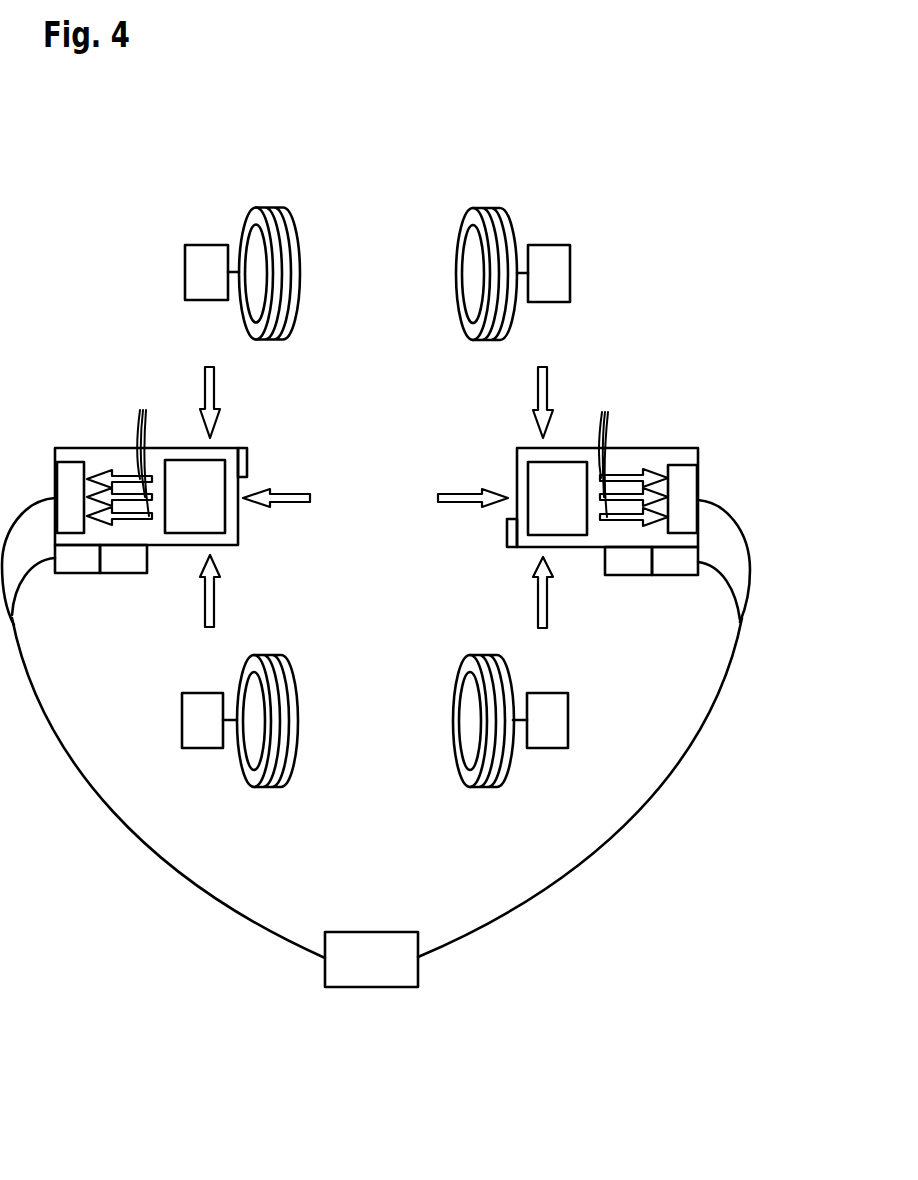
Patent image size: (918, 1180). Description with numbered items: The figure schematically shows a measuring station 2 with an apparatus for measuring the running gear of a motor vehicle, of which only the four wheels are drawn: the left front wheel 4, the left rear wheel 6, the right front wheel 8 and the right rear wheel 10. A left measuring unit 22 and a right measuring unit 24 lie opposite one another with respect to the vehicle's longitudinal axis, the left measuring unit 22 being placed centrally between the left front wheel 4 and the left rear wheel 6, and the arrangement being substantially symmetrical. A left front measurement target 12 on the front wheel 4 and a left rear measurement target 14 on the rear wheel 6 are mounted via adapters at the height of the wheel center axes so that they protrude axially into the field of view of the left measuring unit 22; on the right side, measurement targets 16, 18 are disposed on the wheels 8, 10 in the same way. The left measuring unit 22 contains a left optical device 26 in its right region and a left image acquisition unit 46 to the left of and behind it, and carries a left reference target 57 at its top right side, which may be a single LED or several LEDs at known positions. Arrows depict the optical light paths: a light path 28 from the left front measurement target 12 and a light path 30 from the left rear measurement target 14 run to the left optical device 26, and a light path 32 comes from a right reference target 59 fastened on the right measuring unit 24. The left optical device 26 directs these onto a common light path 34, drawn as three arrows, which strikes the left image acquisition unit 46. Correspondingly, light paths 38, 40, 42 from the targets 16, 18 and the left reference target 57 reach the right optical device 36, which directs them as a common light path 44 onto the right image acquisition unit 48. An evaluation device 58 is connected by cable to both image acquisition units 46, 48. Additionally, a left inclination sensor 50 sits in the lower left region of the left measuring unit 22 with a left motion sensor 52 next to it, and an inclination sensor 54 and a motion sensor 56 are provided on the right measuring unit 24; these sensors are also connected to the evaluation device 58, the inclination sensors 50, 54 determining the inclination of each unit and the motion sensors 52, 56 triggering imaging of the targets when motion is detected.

The measuring station 2 is at (628, 192).
The left front motor vehicle wheel 4 is at (273, 207).
The left rear motor vehicle wheel 6 is at (268, 787).
The right front motor vehicle wheel 8 is at (490, 208).
The right rear motor vehicle wheel 10 is at (485, 787).
The left front measurement target 12 is at (207, 245).
The left rear measurement target 14 is at (203, 748).
The right front measurement target 16 is at (553, 245).
The right rear measurement target 18 is at (548, 748).
The left measuring unit 22 is at (116, 448).
The right measuring unit 24 is at (640, 448).
The left optical device 26 is at (180, 472).
The light path 28 is at (214, 388).
The light path 30 is at (214, 601).
The optical light path 32 is at (298, 503).
The common light path 34 is at (123, 452).
The right optical device 36 is at (571, 475).
The light path 38 is at (538, 390).
The light path 40 is at (538, 604).
The light path 42 is at (455, 494).
The common light path 44 is at (631, 454).
The left image acquisition unit 46 is at (72, 470).
The right image acquisition unit 48 is at (684, 470).
The left inclination sensor 50 is at (78, 573).
The left motion sensor 52 is at (122, 573).
The inclination sensor 54 is at (673, 575).
The motion sensor 56 is at (628, 575).
The left reference target 57 is at (247, 462).
The evaluation device 58 is at (372, 932).
The right reference target 59 is at (507, 534).